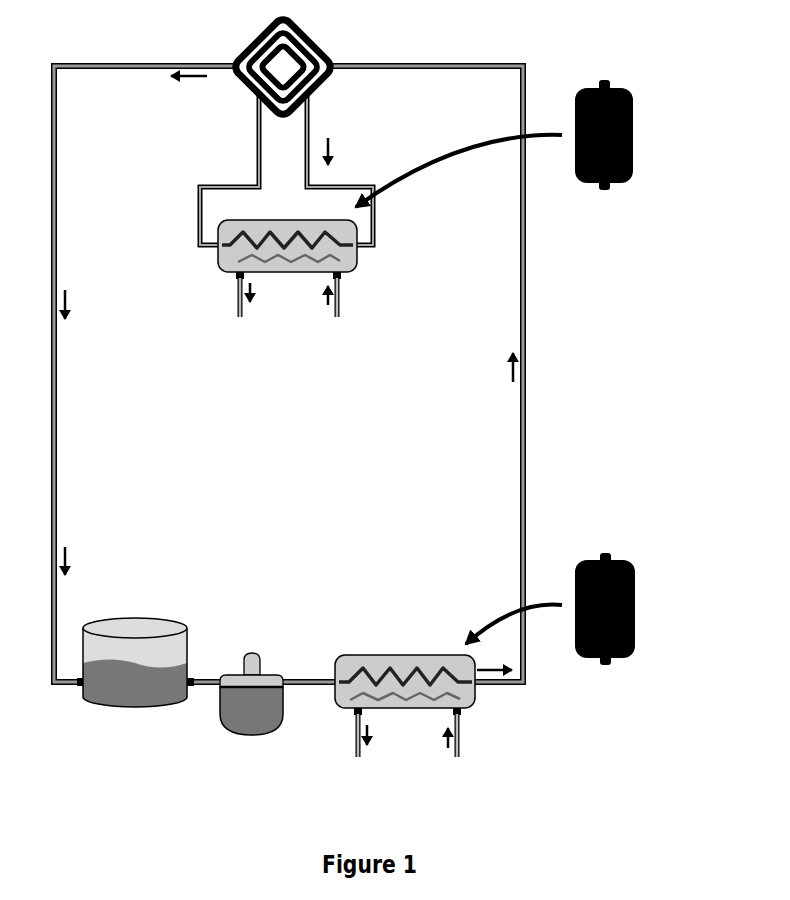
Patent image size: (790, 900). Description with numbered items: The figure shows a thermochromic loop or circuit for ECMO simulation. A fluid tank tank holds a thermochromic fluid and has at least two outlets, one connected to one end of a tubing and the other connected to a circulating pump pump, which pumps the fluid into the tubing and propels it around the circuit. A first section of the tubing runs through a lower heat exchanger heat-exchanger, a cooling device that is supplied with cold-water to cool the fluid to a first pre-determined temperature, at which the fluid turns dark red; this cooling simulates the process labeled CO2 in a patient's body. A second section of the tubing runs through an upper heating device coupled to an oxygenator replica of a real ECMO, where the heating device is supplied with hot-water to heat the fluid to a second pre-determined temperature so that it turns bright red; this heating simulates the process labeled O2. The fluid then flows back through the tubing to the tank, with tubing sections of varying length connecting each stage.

The hot water hot-water is at (235, 283).
The heat exchanger heat-exchanger is at (415, 618).
The cold water cold-water is at (353, 725).
The element tank is at (143, 613).
The element pump is at (222, 730).
The oxygenation O2 is at (514, 151).
The deoxygenation CO2 is at (579, 625).